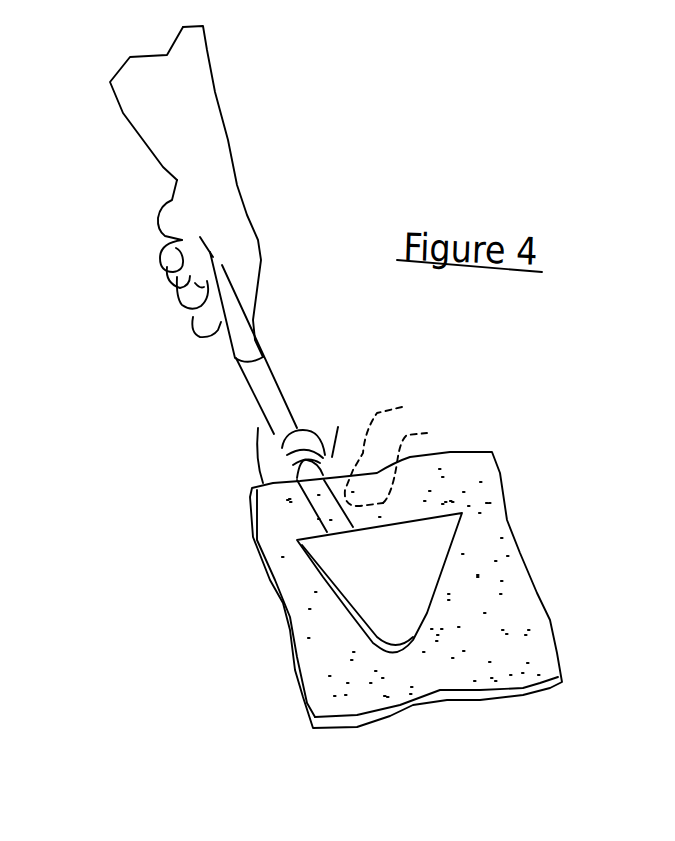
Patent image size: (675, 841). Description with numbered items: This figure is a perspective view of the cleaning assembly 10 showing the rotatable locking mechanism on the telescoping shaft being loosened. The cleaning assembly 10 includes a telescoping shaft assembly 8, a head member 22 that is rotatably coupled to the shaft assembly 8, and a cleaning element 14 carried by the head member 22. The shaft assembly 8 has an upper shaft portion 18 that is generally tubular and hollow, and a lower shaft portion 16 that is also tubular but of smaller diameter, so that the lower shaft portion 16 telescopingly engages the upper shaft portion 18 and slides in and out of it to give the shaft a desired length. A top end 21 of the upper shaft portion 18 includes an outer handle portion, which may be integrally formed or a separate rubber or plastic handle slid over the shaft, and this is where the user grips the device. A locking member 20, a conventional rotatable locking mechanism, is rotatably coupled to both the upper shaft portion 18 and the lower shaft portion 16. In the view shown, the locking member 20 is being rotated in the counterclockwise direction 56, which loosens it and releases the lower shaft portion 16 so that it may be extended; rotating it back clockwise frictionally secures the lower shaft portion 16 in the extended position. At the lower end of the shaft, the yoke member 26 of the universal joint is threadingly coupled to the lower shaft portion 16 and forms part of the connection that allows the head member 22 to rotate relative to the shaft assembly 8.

The telescoping shaft assembly 8 is at (276, 368).
The cleaning assembly 10 is at (412, 530).
The cleaning element 14 is at (528, 630).
The lower shaft portion 16 is at (390, 451).
The upper shaft portion 18 is at (242, 375).
The locking member 20 is at (283, 452).
The top end 21 is at (160, 210).
The head member 22 is at (462, 558).
The yoke member 26 is at (422, 463).
The counterclockwise direction 56 is at (286, 415).